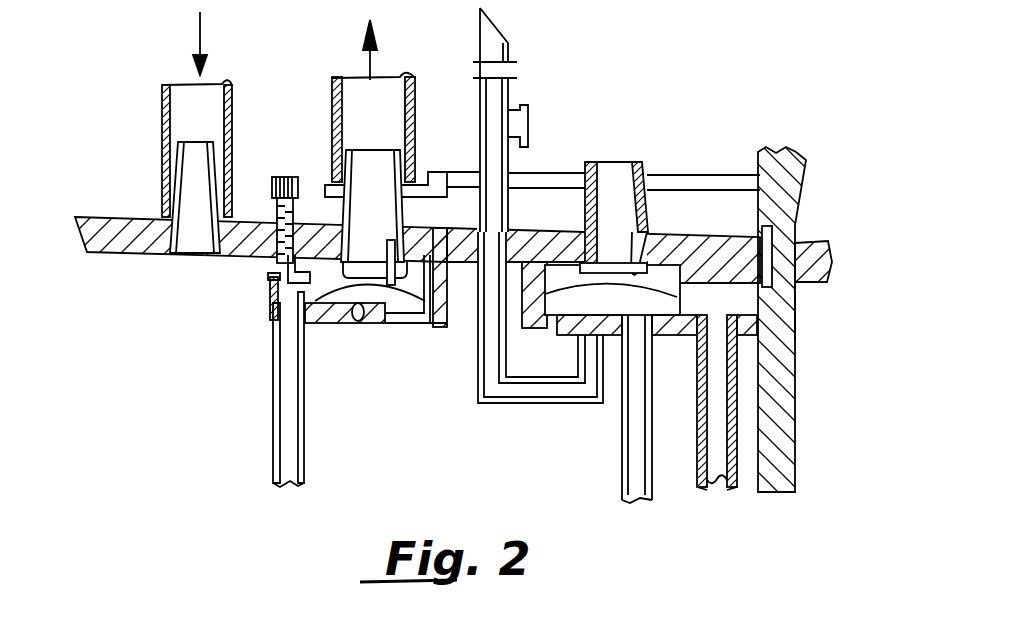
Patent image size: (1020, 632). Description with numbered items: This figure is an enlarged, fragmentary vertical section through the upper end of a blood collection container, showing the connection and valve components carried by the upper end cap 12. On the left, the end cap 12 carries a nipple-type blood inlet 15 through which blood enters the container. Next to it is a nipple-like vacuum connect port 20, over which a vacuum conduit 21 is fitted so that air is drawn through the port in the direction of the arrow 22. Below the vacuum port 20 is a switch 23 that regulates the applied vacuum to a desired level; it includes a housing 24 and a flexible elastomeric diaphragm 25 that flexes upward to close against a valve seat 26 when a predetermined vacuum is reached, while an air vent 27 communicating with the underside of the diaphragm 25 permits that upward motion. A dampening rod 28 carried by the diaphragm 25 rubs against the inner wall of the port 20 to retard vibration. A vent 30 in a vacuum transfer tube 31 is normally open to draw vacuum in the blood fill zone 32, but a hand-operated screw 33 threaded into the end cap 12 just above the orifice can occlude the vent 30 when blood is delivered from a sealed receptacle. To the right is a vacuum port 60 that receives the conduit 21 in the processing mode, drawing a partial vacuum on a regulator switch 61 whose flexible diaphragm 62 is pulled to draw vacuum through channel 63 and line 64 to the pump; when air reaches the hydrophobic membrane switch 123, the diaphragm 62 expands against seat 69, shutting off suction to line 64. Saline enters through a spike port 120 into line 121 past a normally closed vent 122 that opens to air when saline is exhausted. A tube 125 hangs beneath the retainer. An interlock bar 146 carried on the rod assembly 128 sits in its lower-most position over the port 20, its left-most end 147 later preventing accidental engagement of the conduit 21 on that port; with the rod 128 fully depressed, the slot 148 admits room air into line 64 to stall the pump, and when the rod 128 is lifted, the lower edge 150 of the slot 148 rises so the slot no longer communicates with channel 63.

The upper end cap 12 is at (122, 230).
The nipple-type blood inlet 15 is at (182, 157).
The vacuum connect port 20 is at (342, 213).
The vacuum conduit 21 is at (333, 97).
The arrow 22 is at (374, 56).
The switch 23 is at (330, 323).
The housing 24 is at (408, 328).
The diaphragm 25 is at (355, 297).
The valve seat 26 is at (350, 263).
The air vent 27 is at (438, 230).
The dampening rod 28 is at (393, 257).
The vent orifice 30 is at (273, 300).
The vacuum transfer tube 31 is at (273, 393).
The blood fill zone 32 is at (232, 276).
The hand-operated screw 33 is at (273, 187).
The vacuum port 60 is at (610, 173).
The regulator switch 61 is at (565, 343).
The flexible diaphragm 62 is at (603, 277).
The horizontal channel 63 is at (707, 312).
The line 64 is at (715, 463).
The seat 69 is at (645, 217).
The spike port 120 is at (490, 68).
The line 121 is at (490, 388).
The vent 122 is at (528, 113).
The membrane switch 123 is at (643, 317).
The outlet tube 125 is at (633, 443).
The rod assembly 128 is at (795, 192).
The interlock bar 146 is at (542, 177).
The left-most end of interlock bar 147 is at (367, 193).
The slot 148 is at (762, 287).
The lower edge of slot 150 is at (793, 333).